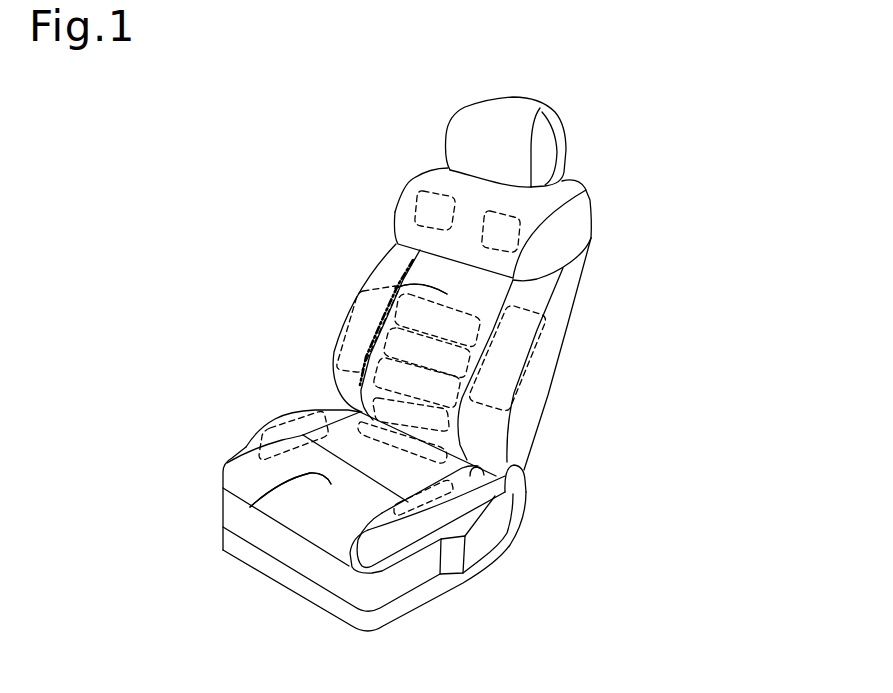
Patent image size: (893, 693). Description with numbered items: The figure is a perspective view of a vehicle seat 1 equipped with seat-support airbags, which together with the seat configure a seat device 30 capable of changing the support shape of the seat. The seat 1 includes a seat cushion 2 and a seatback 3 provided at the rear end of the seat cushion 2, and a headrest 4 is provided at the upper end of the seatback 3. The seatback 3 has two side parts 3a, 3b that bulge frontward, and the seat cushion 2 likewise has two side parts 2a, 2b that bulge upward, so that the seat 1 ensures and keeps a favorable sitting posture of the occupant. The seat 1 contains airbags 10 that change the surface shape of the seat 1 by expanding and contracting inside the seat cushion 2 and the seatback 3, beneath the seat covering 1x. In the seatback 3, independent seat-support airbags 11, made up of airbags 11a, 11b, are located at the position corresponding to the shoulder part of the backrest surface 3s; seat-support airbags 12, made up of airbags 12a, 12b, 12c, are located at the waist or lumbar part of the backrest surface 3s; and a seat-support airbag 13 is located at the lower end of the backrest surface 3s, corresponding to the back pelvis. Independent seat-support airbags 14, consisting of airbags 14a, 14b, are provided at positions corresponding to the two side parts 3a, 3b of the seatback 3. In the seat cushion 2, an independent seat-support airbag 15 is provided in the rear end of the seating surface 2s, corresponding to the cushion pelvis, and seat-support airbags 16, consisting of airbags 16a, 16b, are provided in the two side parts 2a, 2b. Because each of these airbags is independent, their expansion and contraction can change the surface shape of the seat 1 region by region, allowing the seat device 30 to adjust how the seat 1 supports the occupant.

The vehicle seat 1 is at (207, 139).
The seat device 30 is at (413, 364).
The seat covering 1x is at (348, 395).
The seat cushion 2 is at (222, 466).
The side part 2a is at (280, 418).
The side part 2b is at (518, 490).
The seating surface 2s is at (248, 507).
The seatback 3 is at (591, 240).
The side part 3a is at (393, 247).
The side part 3b is at (525, 287).
The backrest surface 3s is at (395, 288).
The headrest 4 is at (566, 148).
The airbags 10 is at (413, 387).
The seat-support airbags 11 is at (525, 198).
The seat-support airbag 11a is at (414, 191).
The seat-support airbag 11b is at (525, 232).
The seat-support airbags 12 is at (555, 357).
The seat-support airbag 12a is at (478, 349).
The seat-support airbag 12b is at (466, 374).
The seat-support airbag 12c is at (460, 402).
The seat-support airbag 13 is at (458, 436).
The seat-support airbags 14 is at (438, 348).
The seat-support airbag 14a is at (347, 317).
The seat-support airbag 14b is at (545, 328).
The seat-support airbag 15 is at (348, 398).
The seat-support airbags 16 is at (372, 476).
The seat-support airbag 16a is at (262, 420).
The seat-support airbag 16b is at (452, 492).